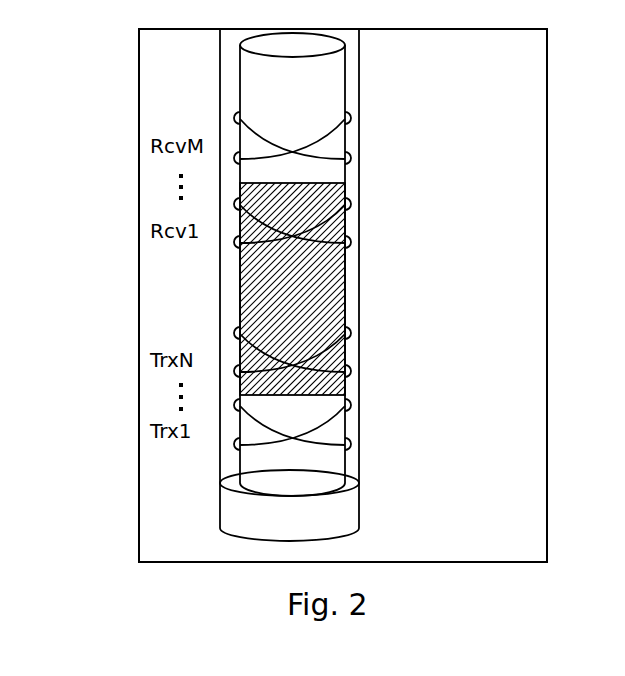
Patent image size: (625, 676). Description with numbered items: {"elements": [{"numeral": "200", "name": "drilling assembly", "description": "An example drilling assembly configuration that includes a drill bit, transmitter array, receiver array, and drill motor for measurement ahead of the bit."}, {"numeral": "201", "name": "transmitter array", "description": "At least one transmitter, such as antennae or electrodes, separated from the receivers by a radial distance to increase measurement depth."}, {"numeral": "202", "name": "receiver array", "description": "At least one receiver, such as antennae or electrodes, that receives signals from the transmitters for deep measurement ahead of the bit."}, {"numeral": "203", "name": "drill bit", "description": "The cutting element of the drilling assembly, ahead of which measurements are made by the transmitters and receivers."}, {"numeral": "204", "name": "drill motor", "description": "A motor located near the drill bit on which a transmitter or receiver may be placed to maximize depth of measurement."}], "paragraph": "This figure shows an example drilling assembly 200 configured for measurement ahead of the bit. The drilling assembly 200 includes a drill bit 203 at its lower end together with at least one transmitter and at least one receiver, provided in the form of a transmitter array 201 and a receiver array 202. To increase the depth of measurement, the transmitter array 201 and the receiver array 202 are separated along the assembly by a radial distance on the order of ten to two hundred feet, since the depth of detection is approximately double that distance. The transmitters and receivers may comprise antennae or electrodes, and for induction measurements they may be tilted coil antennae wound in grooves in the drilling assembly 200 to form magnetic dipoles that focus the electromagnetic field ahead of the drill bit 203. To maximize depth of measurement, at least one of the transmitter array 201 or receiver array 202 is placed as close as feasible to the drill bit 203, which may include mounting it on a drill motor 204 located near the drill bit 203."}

The drill collar 200 is at (345, 76).
The transmitter coils 201 is at (365, 325).
The receiver coils 202 is at (365, 110).
The drill bit 203 is at (362, 500).
The hatched tool section 204 is at (340, 284).